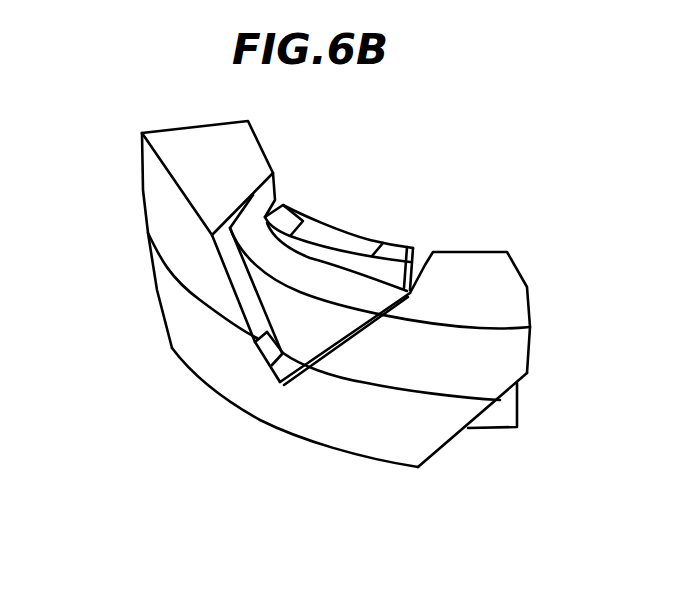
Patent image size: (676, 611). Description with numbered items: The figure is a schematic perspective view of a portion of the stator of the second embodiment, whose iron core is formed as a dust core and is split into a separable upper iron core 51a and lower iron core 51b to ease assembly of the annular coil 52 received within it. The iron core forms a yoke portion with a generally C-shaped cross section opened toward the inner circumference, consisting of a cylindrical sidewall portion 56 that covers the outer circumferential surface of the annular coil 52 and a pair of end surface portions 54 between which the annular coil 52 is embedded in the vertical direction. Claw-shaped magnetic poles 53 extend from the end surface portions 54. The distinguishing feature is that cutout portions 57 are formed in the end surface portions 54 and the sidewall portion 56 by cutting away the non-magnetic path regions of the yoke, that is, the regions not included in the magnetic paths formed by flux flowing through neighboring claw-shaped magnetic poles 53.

The upper iron core 51a is at (142, 202).
The lower iron core 51b is at (310, 432).
The annular coil 52 is at (303, 268).
The claw-shaped magnetic poles 53 is at (367, 240).
The end surface portion 54 is at (477, 265).
The sidewall portion 56 is at (182, 342).
The cutout portions 57 is at (328, 334).